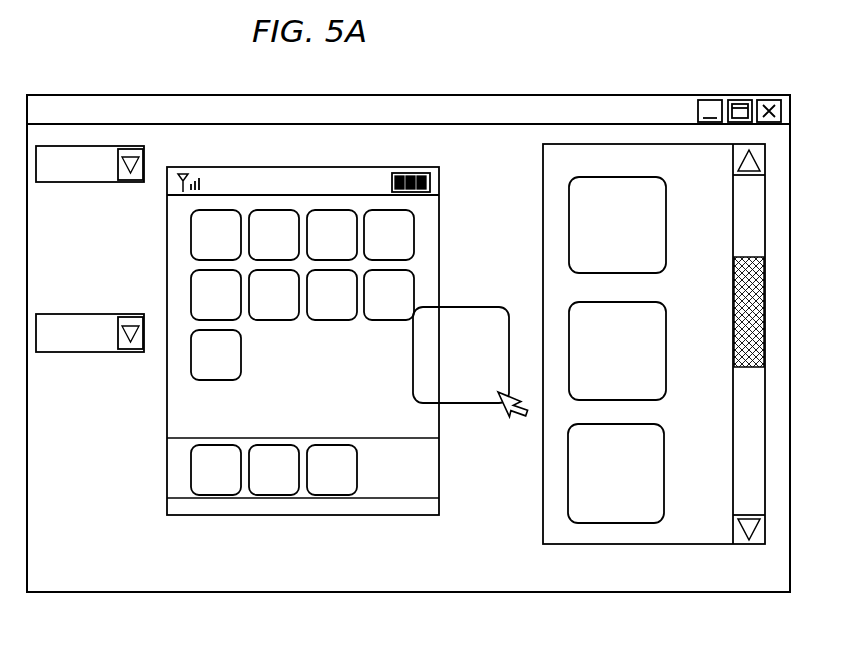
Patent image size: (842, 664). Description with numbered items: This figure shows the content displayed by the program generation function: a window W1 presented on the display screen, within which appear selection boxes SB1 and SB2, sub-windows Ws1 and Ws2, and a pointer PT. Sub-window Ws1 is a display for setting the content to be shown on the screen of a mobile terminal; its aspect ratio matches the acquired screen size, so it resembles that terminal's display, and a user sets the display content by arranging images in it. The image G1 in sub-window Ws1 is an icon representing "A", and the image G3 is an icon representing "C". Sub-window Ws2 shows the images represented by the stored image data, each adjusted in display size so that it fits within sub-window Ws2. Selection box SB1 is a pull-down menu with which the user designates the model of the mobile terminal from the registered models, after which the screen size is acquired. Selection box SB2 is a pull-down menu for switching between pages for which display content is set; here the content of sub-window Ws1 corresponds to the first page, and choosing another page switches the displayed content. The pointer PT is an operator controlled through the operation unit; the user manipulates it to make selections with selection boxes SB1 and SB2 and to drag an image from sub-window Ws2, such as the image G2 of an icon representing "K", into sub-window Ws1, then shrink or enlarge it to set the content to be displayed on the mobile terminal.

The window W1 is at (152, 594).
The selection box SB1 is at (80, 184).
The selection box SB2 is at (80, 355).
The sub-window Ws1 is at (245, 516).
The sub-window Ws2 is at (541, 538).
The image G1 is at (190, 235).
The image G2 is at (468, 307).
The image G3 is at (324, 210).
The pointer PT is at (522, 418).